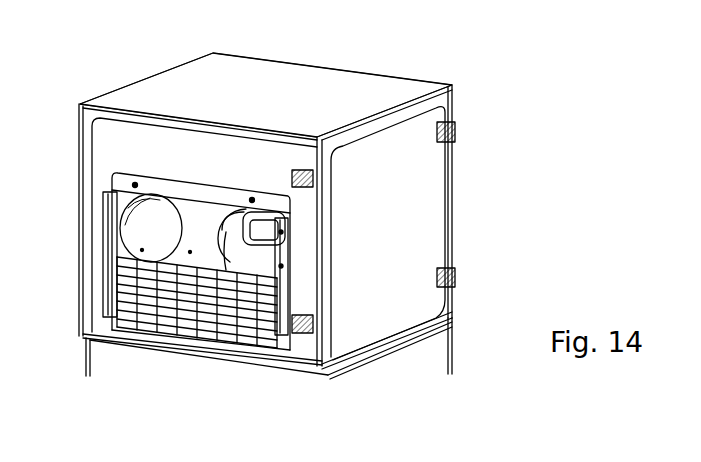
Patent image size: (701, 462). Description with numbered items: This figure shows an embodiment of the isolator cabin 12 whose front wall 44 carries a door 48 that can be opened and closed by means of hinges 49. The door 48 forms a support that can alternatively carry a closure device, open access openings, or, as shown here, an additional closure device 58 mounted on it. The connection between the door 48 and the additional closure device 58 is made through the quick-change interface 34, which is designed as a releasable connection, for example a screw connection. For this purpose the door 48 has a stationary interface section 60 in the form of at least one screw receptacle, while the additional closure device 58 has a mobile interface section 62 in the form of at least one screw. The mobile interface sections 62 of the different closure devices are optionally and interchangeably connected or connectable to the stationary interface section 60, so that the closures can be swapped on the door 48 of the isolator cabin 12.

The isolator cabin 12 is at (500, 202).
The quick-change interface 34 is at (206, 158).
The front wall 44 is at (92, 118).
The door 48 is at (136, 143).
The hinges 49 is at (305, 150).
The additional closure device 58 is at (112, 298).
The stationary interface section 60 is at (187, 220).
The mobile interface section 62 is at (104, 210).